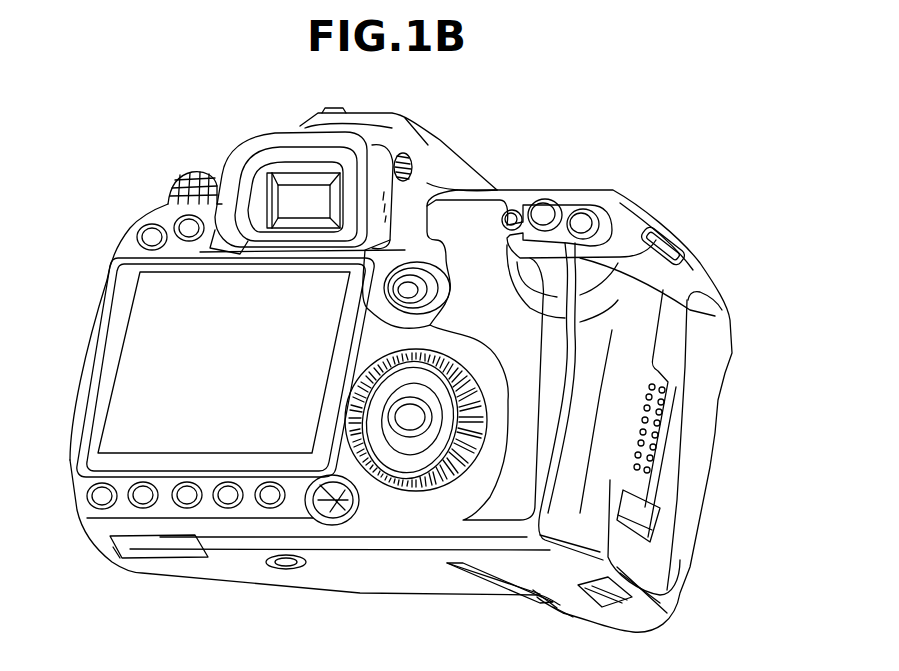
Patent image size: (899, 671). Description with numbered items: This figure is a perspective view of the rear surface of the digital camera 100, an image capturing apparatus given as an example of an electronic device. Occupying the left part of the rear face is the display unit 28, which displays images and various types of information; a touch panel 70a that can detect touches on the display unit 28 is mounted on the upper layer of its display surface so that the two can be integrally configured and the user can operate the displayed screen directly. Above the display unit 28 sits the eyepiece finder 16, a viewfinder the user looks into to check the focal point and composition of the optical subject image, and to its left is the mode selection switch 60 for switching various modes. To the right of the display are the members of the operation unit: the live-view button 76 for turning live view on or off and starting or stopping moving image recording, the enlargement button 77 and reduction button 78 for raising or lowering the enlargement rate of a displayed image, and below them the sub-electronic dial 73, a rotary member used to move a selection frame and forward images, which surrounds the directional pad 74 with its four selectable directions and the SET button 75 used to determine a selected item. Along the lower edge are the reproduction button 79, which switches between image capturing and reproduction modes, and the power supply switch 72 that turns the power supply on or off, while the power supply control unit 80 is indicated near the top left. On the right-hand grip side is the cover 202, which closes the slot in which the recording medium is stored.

The digital camera 100 is at (683, 201).
The eyepiece finder 16 is at (305, 213).
The display unit 28 is at (148, 325).
The mode selection switch 60 is at (178, 178).
The touch panel 70a is at (128, 380).
The power supply switch 72 is at (335, 505).
The sub-electronic dial 73 is at (372, 484).
The directional pad 74 is at (395, 450).
The SET button 75 is at (410, 415).
The live-view button 76 is at (410, 278).
The enlargement button 77 is at (582, 222).
The reduction button 78 is at (547, 212).
The reproduction button 79 is at (270, 497).
The power supply control unit 80 is at (143, 228).
The cover 202 is at (630, 397).